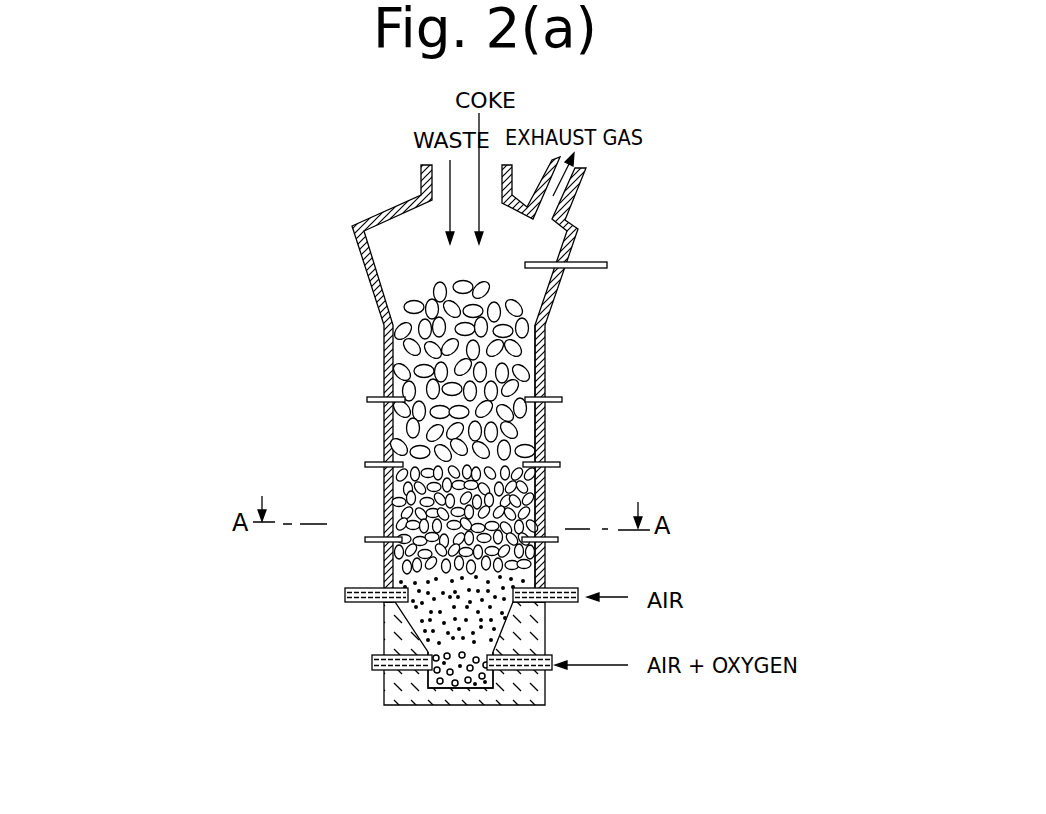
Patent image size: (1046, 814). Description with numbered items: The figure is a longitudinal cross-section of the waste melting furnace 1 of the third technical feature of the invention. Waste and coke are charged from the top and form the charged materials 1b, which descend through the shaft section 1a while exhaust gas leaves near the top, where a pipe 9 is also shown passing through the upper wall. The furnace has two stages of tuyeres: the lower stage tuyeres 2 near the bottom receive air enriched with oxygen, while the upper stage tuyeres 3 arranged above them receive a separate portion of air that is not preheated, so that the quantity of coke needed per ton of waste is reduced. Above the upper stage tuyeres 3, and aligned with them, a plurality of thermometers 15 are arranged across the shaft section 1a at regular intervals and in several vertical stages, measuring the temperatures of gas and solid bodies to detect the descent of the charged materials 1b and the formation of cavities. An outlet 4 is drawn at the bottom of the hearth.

The waste melting furnace 1 is at (381, 381).
The shaft section 1a is at (547, 433).
The charged materials 1b is at (527, 341).
The lower stage tuyeres 2 is at (372, 656).
The upper stage tuyeres 3 is at (372, 589).
The tap hole / outlet 4 is at (458, 660).
The exhaust gas duct pipe 9 is at (593, 263).
The thermometers 15 is at (558, 398).